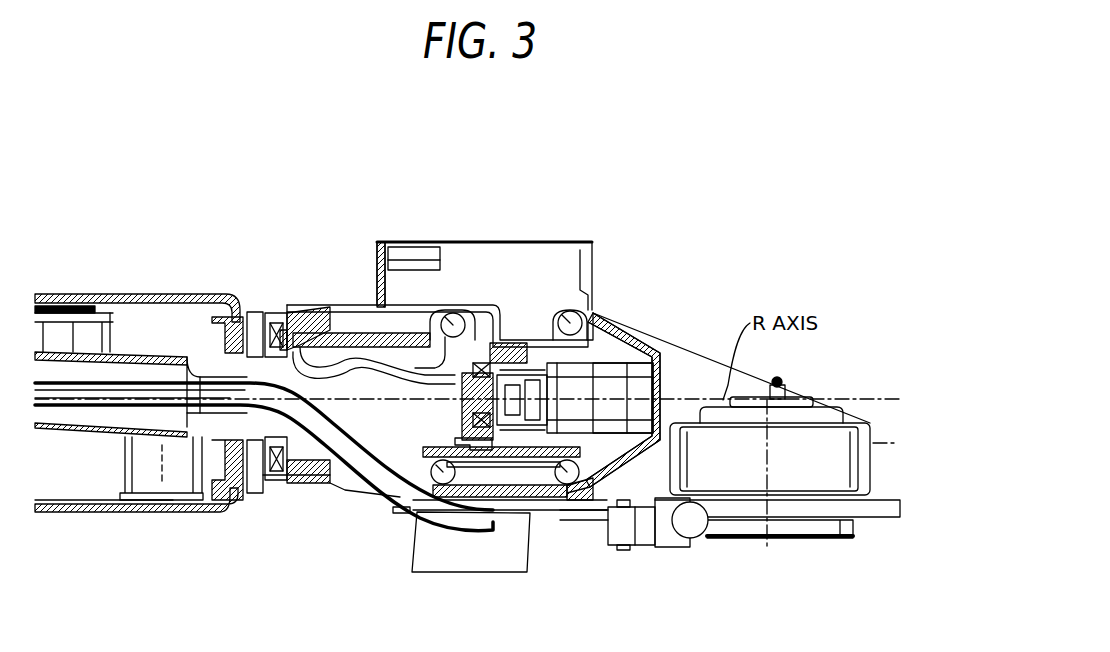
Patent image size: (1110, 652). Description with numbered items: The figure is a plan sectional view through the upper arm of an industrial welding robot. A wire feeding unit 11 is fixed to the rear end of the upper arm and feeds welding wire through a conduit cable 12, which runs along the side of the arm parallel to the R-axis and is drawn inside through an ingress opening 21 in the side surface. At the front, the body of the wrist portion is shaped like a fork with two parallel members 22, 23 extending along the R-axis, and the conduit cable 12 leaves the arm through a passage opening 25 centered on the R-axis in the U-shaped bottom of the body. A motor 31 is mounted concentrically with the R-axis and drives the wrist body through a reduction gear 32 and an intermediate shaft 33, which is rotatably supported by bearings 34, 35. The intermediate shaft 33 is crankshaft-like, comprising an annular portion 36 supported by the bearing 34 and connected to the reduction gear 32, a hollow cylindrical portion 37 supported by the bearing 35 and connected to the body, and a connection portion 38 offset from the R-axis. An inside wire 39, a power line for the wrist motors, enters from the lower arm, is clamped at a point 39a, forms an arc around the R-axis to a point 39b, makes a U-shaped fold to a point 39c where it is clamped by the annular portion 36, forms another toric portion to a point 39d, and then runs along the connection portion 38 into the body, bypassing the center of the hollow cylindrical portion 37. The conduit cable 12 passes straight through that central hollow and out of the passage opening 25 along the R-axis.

The wire feeding unit 11 is at (713, 455).
The conduit cable 12 is at (443, 515).
The ingress opening 21 is at (343, 487).
The member 22 is at (105, 297).
The member 23 is at (180, 520).
The passage opening 25 is at (187, 310).
The motor 31 is at (613, 387).
The reduction gear 32 is at (585, 362).
The intermediate shaft 33 is at (350, 333).
The bearing 34 is at (462, 425).
The bearing 35 is at (302, 307).
The annular portion 36 is at (460, 442).
The hollow cylindrical portion 37 is at (297, 388).
The connection portion 38 is at (397, 337).
The inside wire 39 is at (368, 320).
The point 39a is at (570, 310).
The point 39b is at (568, 485).
The point 39c is at (443, 485).
The point 39d is at (453, 313).